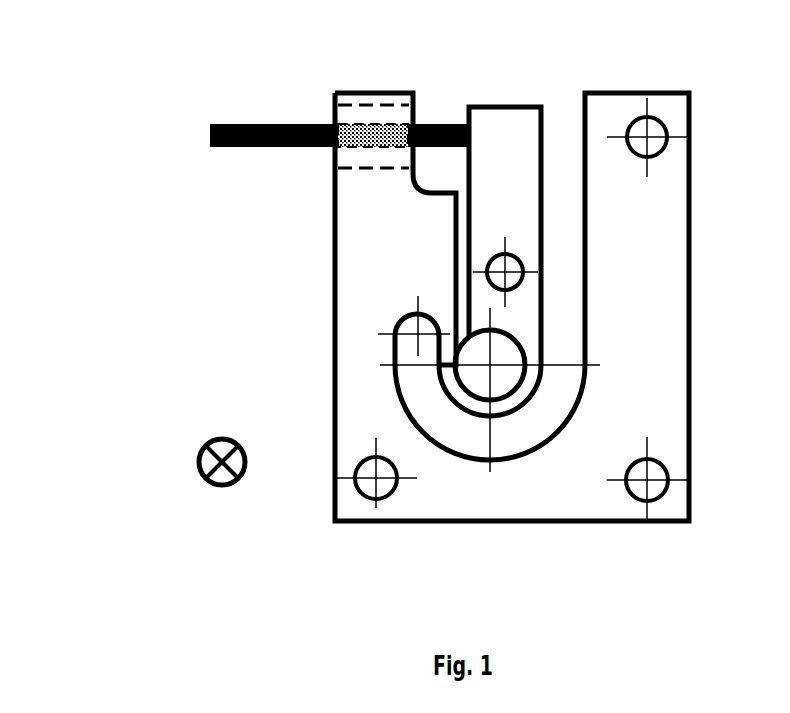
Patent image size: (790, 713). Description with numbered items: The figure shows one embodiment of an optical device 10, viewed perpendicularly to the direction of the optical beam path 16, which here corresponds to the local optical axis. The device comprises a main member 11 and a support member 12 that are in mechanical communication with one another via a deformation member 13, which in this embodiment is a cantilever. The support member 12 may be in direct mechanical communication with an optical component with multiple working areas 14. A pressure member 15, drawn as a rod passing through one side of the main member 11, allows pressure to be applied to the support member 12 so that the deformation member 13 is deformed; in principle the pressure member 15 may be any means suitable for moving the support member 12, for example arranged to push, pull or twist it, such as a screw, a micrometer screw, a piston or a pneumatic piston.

The optical device 10 is at (183, 232).
The main member 11 is at (521, 487).
The support member 12 is at (497, 137).
The deformation member 13 is at (497, 405).
The optical component with multiple working areas 14 is at (491, 267).
The pressure member 15 is at (268, 125).
The optical beam path 16 is at (230, 490).